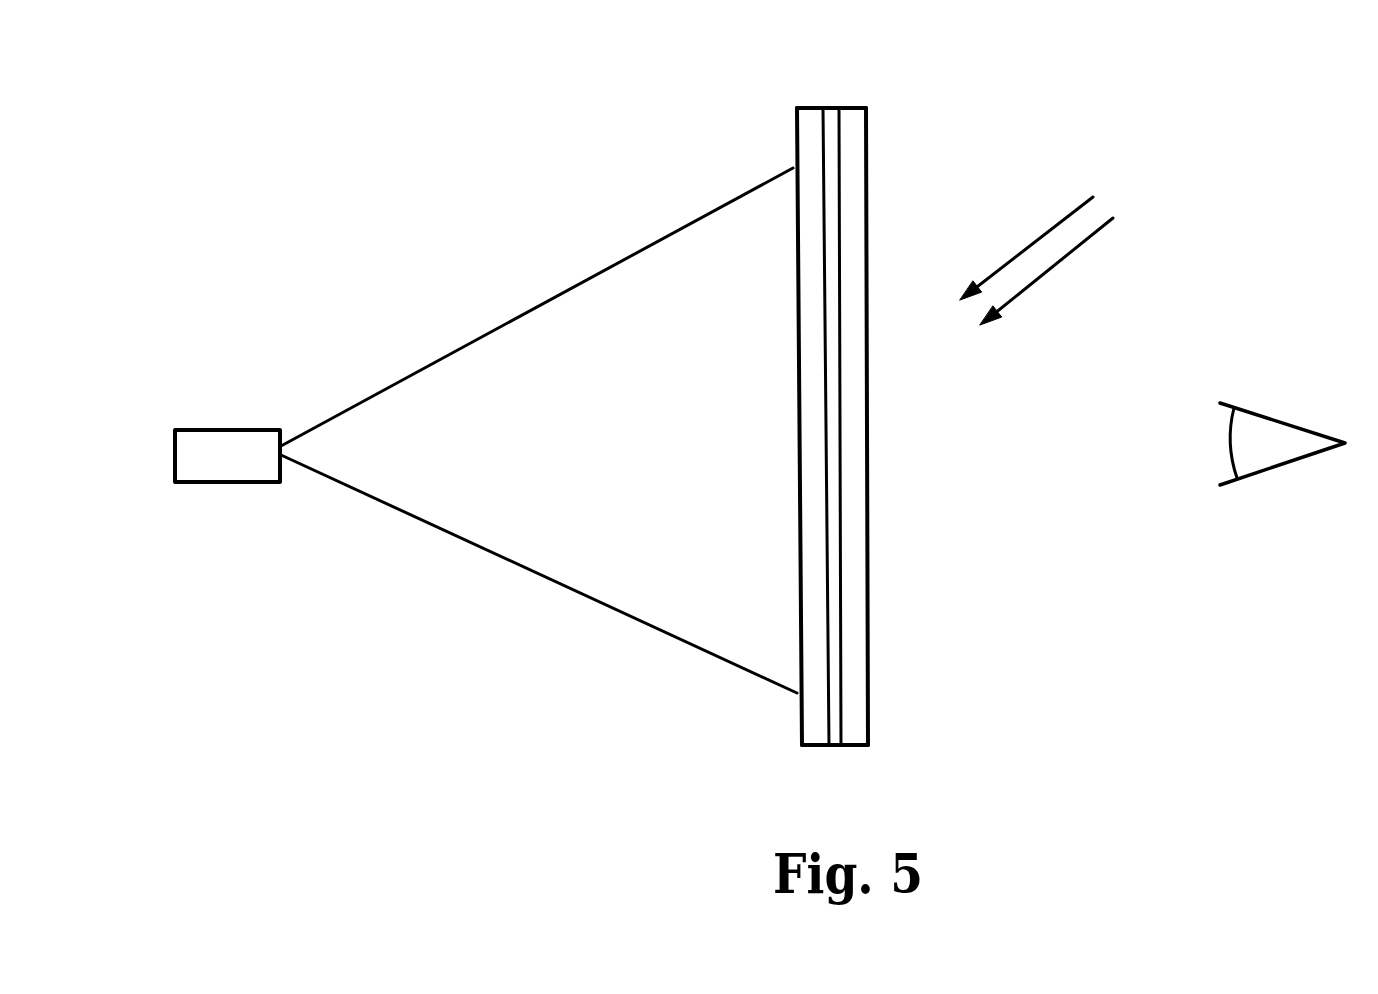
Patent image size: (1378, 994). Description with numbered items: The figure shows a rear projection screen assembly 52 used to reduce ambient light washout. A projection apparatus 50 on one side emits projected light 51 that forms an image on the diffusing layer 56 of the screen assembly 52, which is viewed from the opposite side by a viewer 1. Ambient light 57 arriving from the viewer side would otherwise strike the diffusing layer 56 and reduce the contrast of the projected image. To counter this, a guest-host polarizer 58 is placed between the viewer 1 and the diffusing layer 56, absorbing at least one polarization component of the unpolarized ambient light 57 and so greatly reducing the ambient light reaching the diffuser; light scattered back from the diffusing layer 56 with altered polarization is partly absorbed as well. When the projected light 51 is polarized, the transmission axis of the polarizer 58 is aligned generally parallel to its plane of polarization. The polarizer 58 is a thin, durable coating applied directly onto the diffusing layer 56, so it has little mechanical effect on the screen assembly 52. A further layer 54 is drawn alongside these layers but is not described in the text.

The viewer 1 is at (1285, 425).
The projection apparatus 50 is at (228, 455).
The projected light 51 is at (413, 516).
The rear projection screen assembly 52 is at (820, 422).
The substrate layer 54 is at (799, 380).
The diffusing layer 56 is at (830, 120).
The guest-host polarizer 58 is at (852, 147).
The ambient light 57 is at (1065, 212).